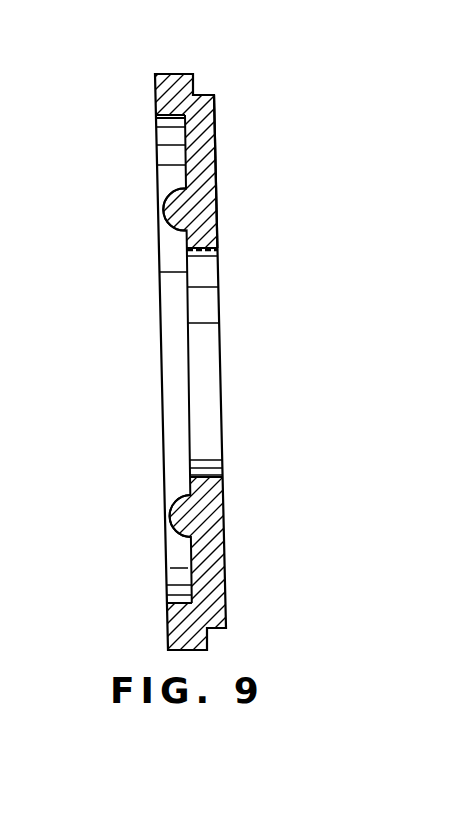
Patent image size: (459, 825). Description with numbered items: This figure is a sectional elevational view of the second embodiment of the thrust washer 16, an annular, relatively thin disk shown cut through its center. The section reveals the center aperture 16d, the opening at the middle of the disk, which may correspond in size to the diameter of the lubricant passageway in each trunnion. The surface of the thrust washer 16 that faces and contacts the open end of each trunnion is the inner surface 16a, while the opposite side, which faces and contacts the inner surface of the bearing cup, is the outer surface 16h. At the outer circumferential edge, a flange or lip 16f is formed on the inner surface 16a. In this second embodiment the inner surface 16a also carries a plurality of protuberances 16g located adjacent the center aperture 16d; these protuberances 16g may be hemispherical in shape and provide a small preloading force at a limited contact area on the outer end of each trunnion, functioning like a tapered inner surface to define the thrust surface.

The thrust washer 16 is at (250, 103).
The flange or lip 16f is at (169, 74).
The outer surface 16h is at (215, 163).
The inner surface 16a is at (158, 165).
The protuberances 16g is at (165, 226).
The center aperture 16d is at (206, 249).